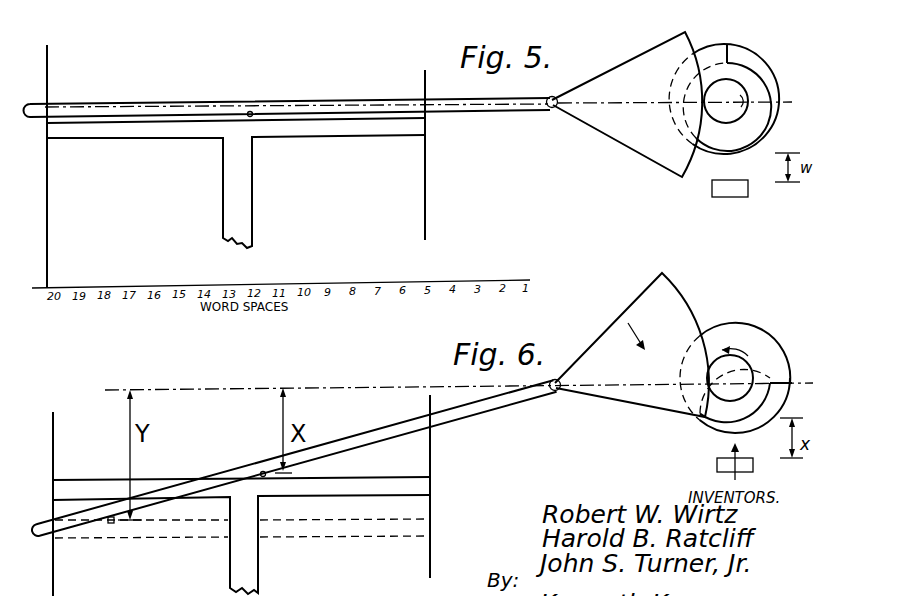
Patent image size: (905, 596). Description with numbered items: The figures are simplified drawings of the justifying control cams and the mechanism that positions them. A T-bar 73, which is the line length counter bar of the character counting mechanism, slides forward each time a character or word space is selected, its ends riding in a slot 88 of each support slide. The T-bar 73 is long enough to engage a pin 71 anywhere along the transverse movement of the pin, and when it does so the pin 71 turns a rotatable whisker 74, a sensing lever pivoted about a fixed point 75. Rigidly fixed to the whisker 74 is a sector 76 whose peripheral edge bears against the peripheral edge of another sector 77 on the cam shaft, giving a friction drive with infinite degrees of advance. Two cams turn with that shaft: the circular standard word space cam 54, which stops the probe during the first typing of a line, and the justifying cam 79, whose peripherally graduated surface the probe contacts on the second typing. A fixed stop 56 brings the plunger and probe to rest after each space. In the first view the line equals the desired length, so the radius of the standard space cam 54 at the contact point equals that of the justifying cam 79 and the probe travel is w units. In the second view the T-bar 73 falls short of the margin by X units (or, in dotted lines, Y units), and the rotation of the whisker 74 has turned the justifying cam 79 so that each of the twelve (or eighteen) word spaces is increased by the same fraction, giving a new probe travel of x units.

In FIG. 5, the standard word space cam 54 is at (750, 63).
In FIG. 6, the standard word space cam 54 is at (712, 421).
In FIG. 5, the fixed stop 56 is at (715, 192).
In FIG. 6, the fixed stop 56 is at (715, 466).
In FIG. 5, the pin 71 is at (253, 112).
In FIG. 6, the pin 71 is at (262, 472).
In FIG. 5, the T-bar 73 is at (117, 128).
In FIG. 6, the T-bar 73 is at (332, 490).
In FIG. 5, the whisker 74 is at (134, 104).
In FIG. 6, the whisker 74 is at (214, 476).
In FIG. 5, the fixed point 75 is at (549, 108).
In FIG. 6, the fixed point 75 is at (553, 392).
In FIG. 5, the sector 76 is at (637, 60).
In FIG. 6, the sector 76 is at (670, 296).
In FIG. 5, the sector 77 is at (687, 101).
In FIG. 6, the sector 77 is at (738, 372).
In FIG. 5, the justifying cam 79 is at (723, 47).
In FIG. 6, the justifying cam 79 is at (719, 336).
In FIG. 5, the slot 88 is at (48, 183).